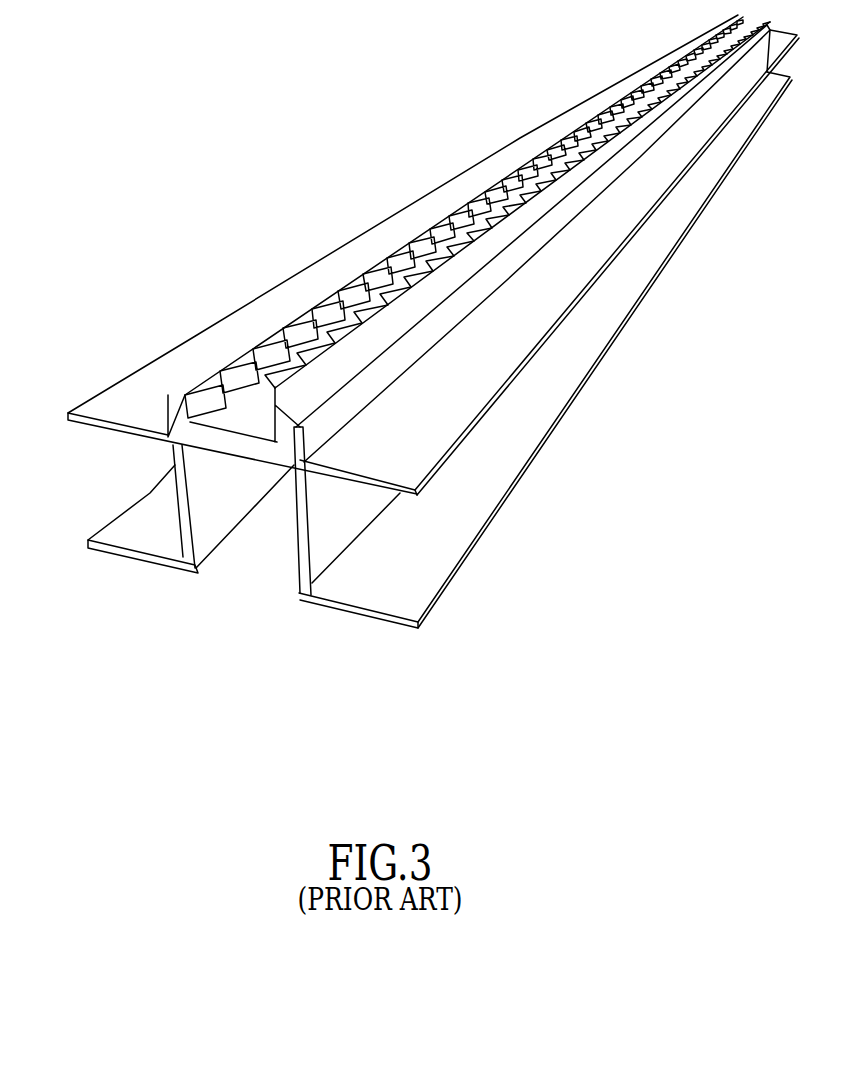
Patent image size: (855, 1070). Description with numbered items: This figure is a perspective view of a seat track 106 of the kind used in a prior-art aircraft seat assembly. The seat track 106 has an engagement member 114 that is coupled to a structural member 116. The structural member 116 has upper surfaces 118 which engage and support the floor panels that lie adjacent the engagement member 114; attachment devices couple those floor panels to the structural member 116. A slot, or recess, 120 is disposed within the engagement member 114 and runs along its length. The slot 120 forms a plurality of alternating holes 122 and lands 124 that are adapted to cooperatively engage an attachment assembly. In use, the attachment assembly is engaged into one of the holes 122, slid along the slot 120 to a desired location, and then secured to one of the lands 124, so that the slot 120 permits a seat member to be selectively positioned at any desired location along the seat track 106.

The seat track 106 is at (419, 321).
The engagement member 114 is at (477, 229).
The structural member 116 is at (140, 368).
The upper surfaces 118 is at (232, 327).
The slot 120 is at (237, 421).
The holes 122 is at (415, 228).
The lands 124 is at (513, 213).